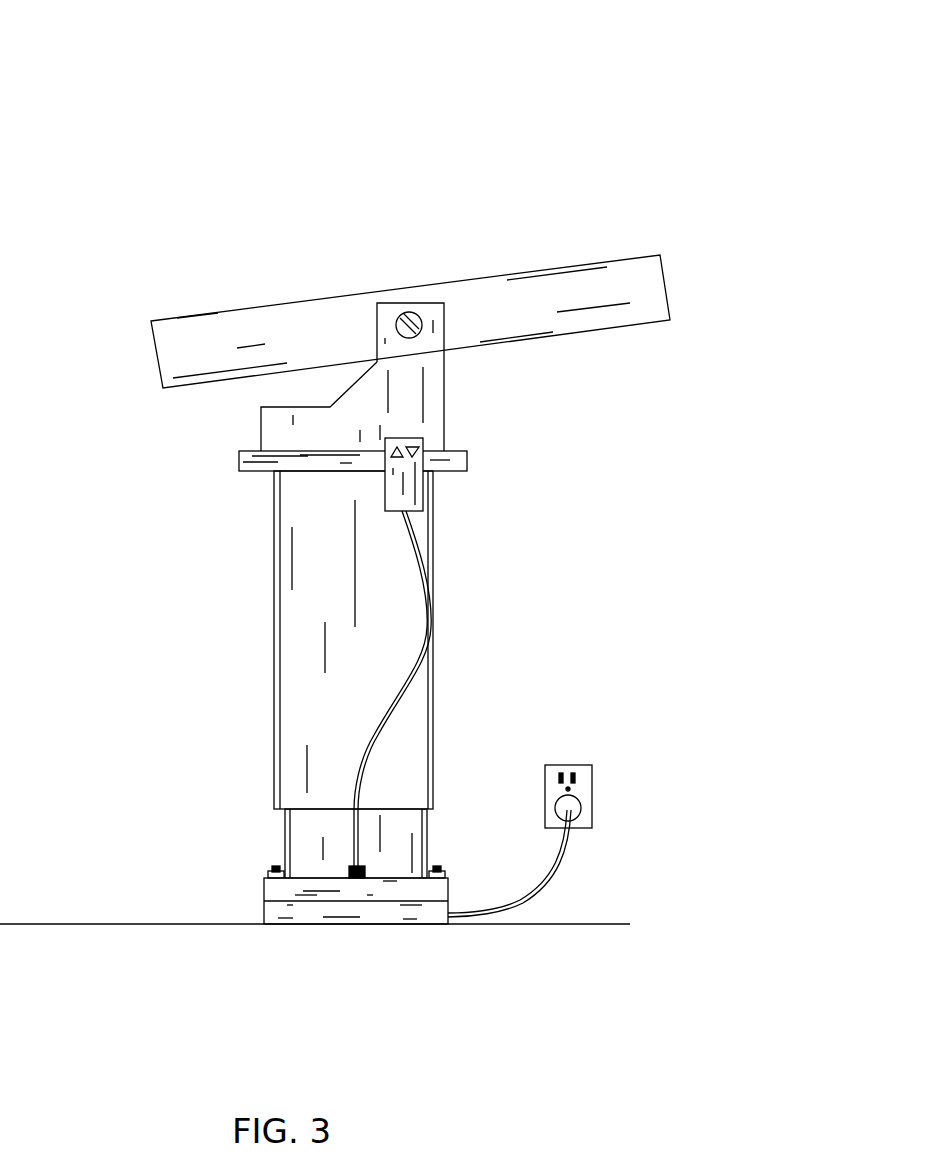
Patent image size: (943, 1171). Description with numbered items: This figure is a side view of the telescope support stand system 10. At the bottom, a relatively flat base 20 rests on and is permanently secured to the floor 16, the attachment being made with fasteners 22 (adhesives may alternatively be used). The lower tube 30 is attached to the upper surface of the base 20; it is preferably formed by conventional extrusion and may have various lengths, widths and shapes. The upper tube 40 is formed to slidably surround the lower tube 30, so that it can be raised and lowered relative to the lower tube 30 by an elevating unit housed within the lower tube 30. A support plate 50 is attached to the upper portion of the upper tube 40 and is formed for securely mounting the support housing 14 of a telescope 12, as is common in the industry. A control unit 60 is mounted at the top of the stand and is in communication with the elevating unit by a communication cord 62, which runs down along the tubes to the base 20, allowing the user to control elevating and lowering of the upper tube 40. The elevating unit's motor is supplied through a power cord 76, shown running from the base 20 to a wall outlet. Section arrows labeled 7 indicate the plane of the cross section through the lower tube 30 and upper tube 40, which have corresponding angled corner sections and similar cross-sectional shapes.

The section line 7- 7 is at (135, 543).
The telescope support stand system 10 is at (250, 135).
The telescope 12 is at (496, 270).
The support housing 14 is at (423, 398).
The floor 16 is at (600, 922).
The base 20 is at (404, 936).
The fasteners 22 is at (268, 874).
The lower tube 30 is at (303, 840).
The upper tube 40 is at (305, 598).
The support plate 50 is at (458, 463).
The control unit 60 is at (409, 487).
The communication cord 62 is at (420, 657).
The power cord 76 is at (572, 850).